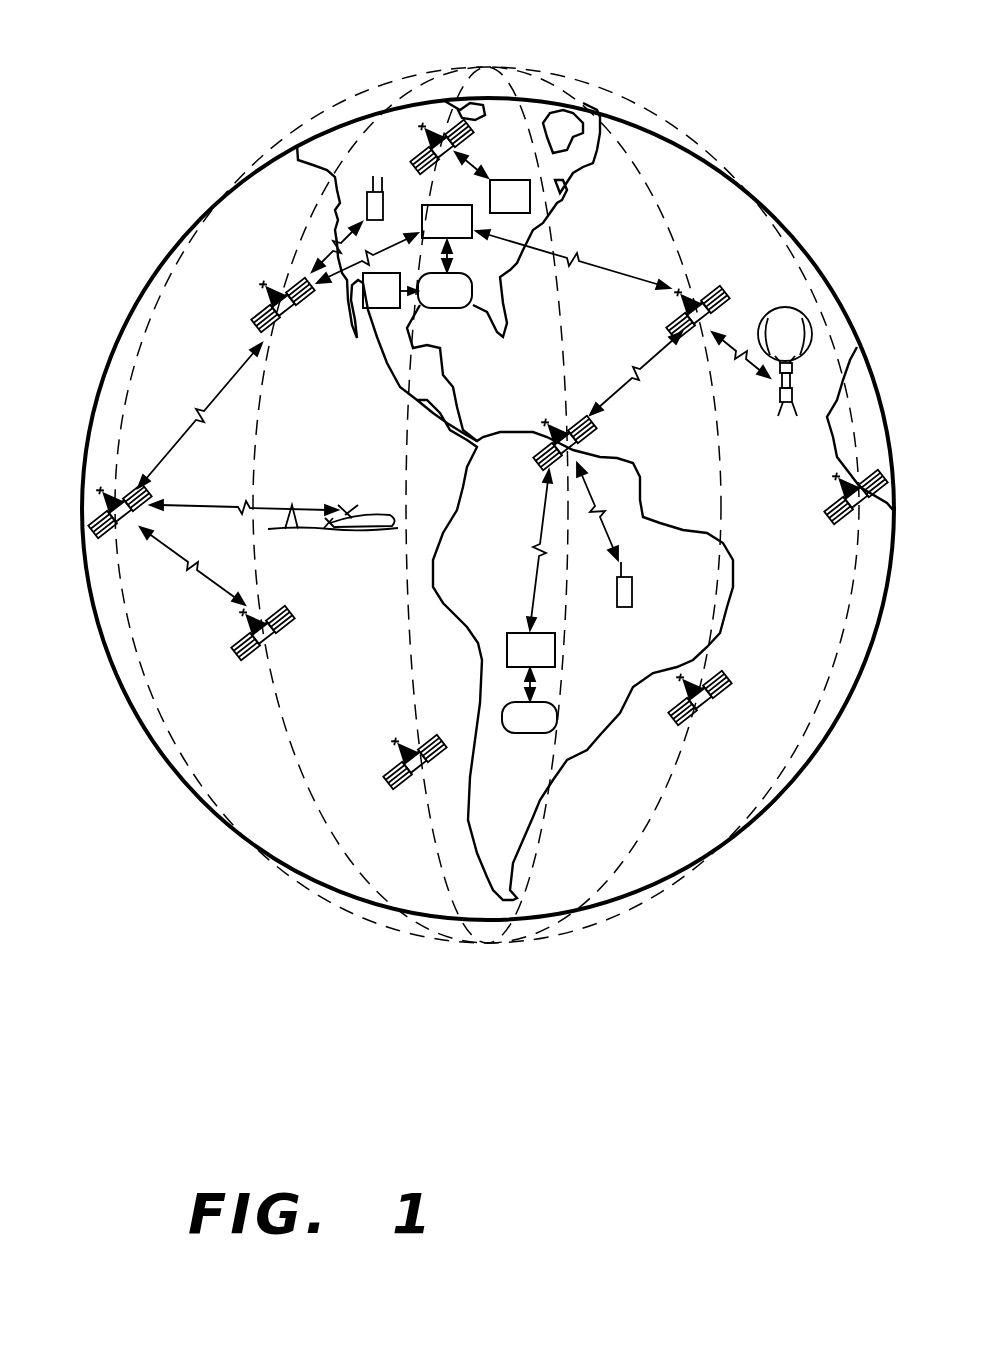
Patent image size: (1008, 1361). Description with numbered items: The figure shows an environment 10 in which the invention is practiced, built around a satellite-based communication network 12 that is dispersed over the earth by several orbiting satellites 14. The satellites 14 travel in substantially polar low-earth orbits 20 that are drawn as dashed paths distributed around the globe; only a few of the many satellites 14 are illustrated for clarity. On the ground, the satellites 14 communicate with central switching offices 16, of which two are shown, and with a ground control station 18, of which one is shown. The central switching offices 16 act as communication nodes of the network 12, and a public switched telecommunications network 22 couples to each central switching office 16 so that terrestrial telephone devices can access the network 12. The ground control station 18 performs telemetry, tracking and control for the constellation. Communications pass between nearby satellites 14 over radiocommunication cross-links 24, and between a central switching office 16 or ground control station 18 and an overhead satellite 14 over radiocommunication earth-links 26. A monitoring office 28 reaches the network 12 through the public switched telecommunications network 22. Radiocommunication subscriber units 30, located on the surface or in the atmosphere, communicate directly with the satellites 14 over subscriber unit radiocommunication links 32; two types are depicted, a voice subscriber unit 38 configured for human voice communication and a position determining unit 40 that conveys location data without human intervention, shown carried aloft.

The environment 10 is at (488, 1078).
The satellite-based communication network 12 is at (534, 942).
The orbiting satellite 14 is at (258, 283).
The central switching office 16 is at (458, 238).
The ground control station 18 is at (517, 180).
The low-earth orbit 20 is at (308, 798).
The public switched telecommunications network 22 is at (455, 308).
The radiocommunication cross-link 24 is at (215, 398).
The radiocommunication earth-link 26 is at (346, 288).
The monitoring office 28 is at (375, 310).
The radiocommunication subscriber unit 30 is at (548, 399).
The subscriber unit radiocommunication link 32 is at (321, 265).
The voice subscriber unit 38 is at (365, 199).
The position determining unit 40 is at (310, 543).